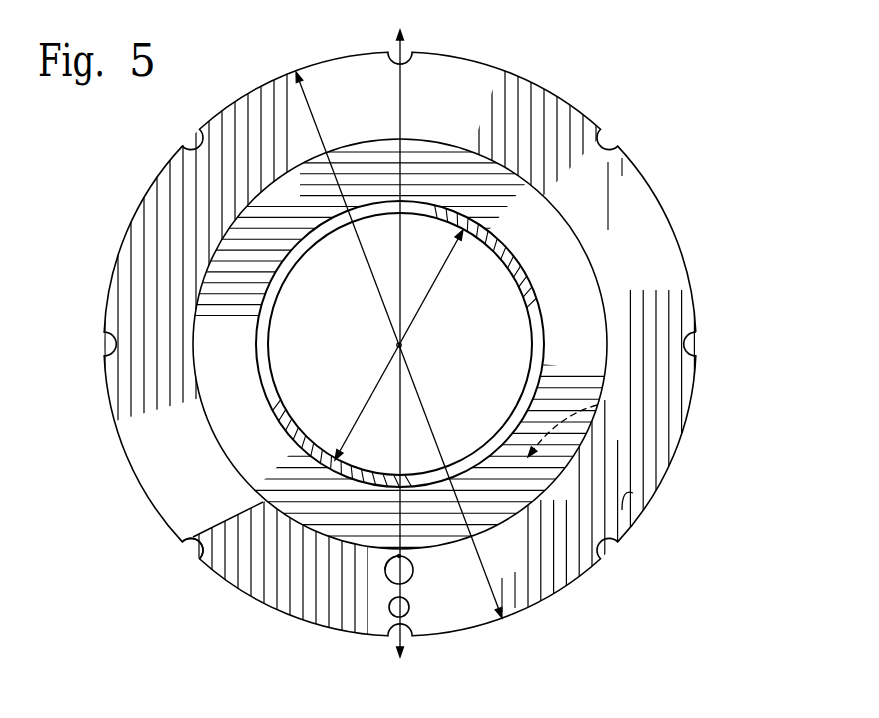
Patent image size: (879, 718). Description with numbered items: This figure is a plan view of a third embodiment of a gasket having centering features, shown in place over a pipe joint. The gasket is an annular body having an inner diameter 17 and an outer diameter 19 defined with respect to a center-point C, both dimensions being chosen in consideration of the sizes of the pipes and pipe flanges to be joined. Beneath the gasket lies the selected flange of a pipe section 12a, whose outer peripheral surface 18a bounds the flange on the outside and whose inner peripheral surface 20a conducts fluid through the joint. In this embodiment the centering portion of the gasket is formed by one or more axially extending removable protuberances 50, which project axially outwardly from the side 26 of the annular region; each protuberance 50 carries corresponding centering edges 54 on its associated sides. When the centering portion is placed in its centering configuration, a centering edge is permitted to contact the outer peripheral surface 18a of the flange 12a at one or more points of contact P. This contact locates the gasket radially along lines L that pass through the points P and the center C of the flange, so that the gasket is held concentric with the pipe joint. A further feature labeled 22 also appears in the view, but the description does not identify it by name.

The pipe section 12a is at (127, 457).
The inner peripheral surface 20a is at (198, 420).
The outer peripheral surface 18a is at (193, 537).
The outer diameter 19 is at (362, 255).
The inner diameter 17 is at (358, 418).
The center-point C is at (403, 347).
The lines L is at (402, 87).
The points of contact P is at (398, 553).
The slot 22 is at (600, 403).
The side of the annular region 26 is at (633, 493).
The removable protuberances 50 is at (428, 571).
The centering edges 54 is at (376, 560).